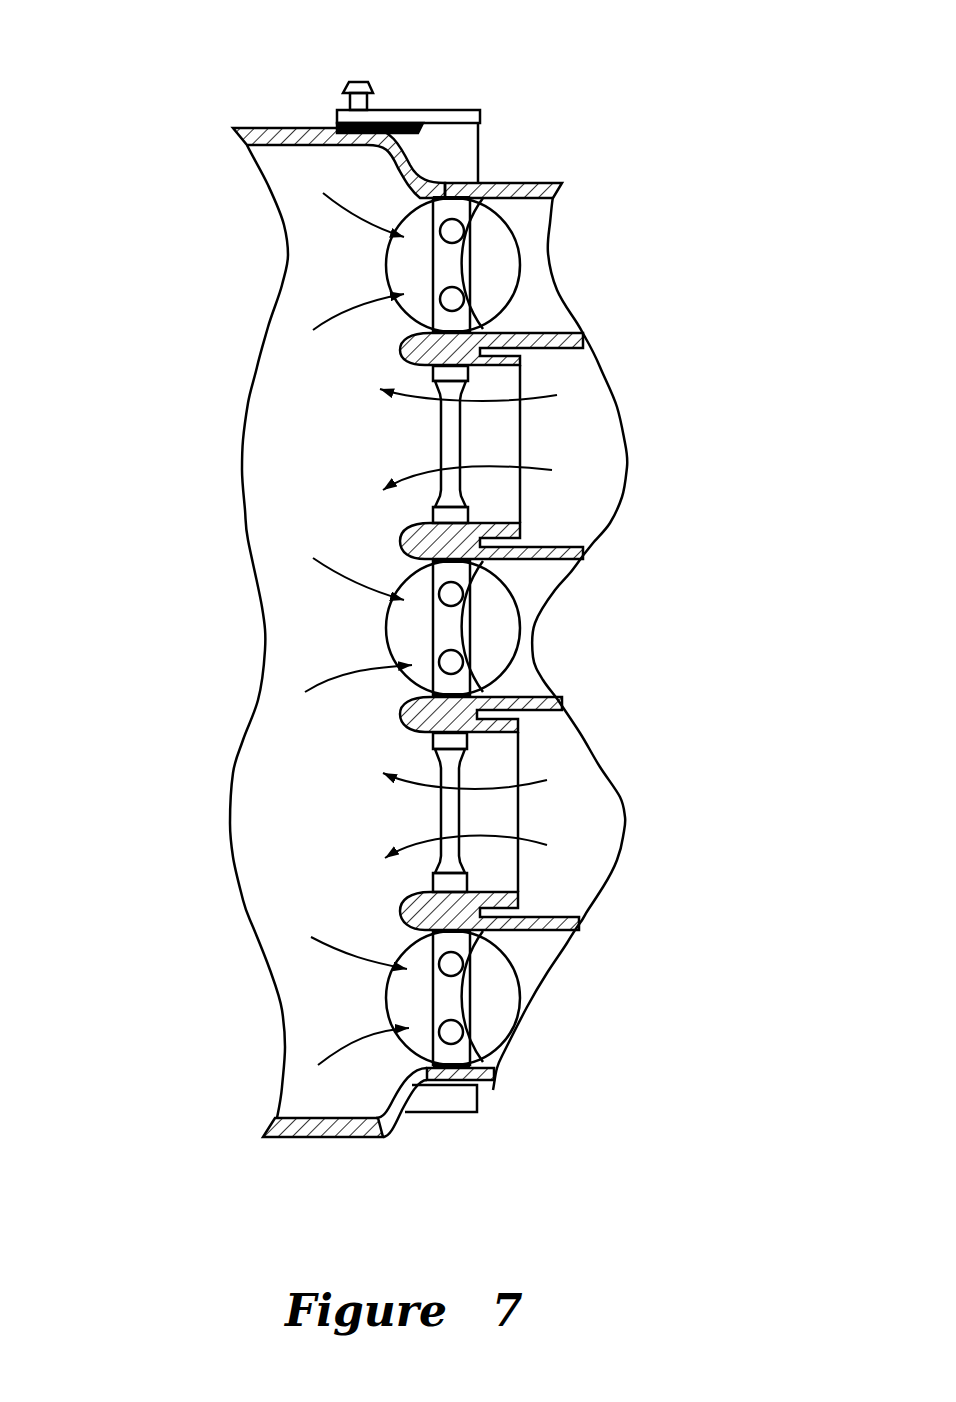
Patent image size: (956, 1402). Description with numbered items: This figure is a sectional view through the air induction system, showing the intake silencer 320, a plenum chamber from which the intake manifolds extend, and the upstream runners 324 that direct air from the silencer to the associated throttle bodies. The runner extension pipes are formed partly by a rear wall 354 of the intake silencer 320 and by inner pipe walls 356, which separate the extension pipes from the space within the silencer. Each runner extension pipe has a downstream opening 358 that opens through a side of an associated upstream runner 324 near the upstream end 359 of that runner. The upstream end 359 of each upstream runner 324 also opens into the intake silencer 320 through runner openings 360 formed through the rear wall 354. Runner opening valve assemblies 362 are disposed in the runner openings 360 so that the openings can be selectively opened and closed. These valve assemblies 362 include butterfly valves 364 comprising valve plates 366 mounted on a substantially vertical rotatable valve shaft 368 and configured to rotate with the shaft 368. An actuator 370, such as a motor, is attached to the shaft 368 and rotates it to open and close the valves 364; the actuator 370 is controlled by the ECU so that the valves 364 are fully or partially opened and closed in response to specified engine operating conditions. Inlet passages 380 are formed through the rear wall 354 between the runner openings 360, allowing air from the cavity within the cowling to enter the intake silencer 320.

The intake silencer 320 is at (278, 126).
The upstream runner 324 is at (532, 182).
The rear wall 354 is at (525, 352).
The inner pipe wall 356 is at (487, 957).
The downstream opening 358 is at (482, 326).
The upstream end 359 is at (496, 174).
The runner opening 360 is at (400, 346).
The runner opening valve assembly 362 is at (330, 262).
The butterfly valve 364 is at (375, 633).
The valve plate 366 is at (507, 605).
The valve shaft 368 is at (462, 210).
The actuator 370 is at (406, 106).
The inlet passage 380 is at (520, 383).